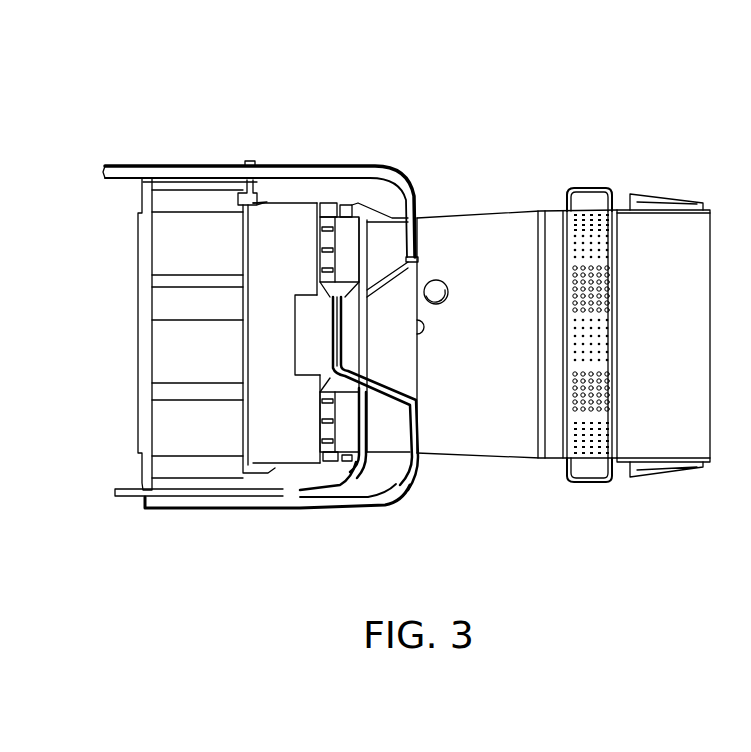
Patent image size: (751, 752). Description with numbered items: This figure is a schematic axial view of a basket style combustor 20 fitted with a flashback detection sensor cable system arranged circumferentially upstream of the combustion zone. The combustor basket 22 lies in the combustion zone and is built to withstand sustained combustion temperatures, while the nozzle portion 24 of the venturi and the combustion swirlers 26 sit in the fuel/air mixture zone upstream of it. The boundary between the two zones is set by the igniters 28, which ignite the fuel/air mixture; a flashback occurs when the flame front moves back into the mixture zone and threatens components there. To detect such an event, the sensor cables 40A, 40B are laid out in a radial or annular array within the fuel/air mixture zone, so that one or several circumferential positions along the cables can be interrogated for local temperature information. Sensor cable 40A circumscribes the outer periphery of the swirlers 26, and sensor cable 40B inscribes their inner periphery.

The basket style combustor 20 is at (554, 146).
The combustor basket 22 is at (493, 435).
The nozzle portion of the venturi 24 is at (400, 308).
The combustion swirlers 26 is at (180, 245).
The igniters 28 is at (421, 225).
The sensor cable 40A is at (213, 170).
The sensor cable 40B is at (282, 500).